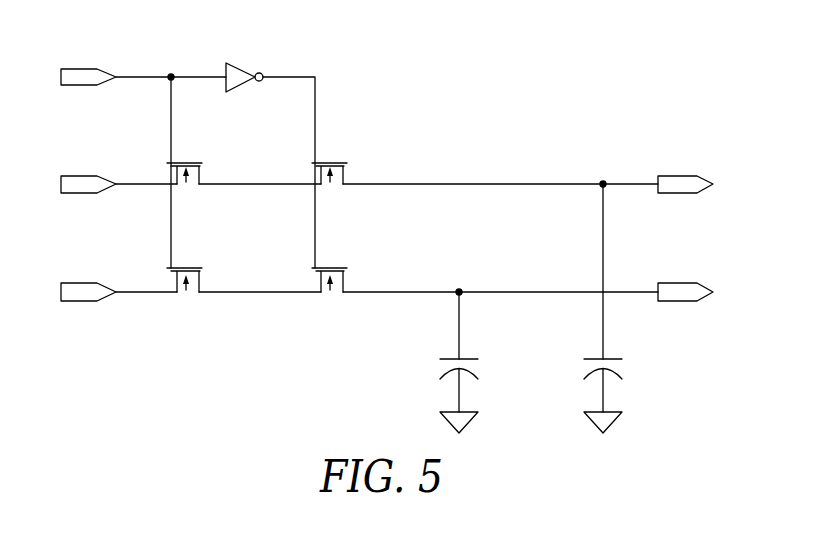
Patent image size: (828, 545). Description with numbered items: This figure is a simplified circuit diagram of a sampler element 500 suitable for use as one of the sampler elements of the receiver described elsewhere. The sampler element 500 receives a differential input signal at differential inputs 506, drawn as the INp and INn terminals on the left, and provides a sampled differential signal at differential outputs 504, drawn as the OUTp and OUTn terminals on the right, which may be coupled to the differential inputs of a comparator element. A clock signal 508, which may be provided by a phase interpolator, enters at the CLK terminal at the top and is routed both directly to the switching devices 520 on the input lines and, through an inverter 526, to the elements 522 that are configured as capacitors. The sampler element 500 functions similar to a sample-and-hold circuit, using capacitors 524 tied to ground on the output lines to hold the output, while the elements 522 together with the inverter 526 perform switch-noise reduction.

The sampler element 500 is at (570, 75).
The differential outputs 504 is at (680, 194).
The differential inputs 506 is at (78, 196).
The clock signal 508 is at (78, 88).
The first switch transistors 520 is at (185, 162).
The element configured as capacitors 522 is at (329, 162).
The capacitors 524 is at (467, 358).
The inverter 526 is at (244, 68).